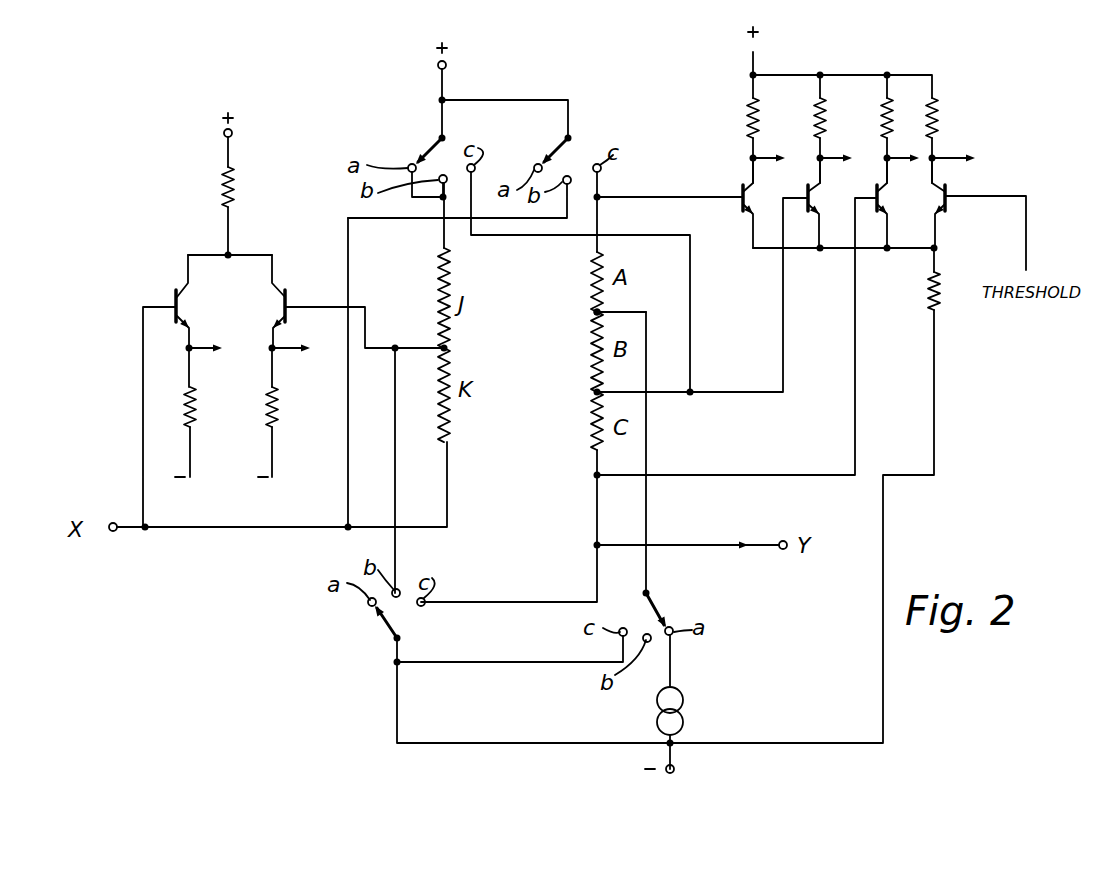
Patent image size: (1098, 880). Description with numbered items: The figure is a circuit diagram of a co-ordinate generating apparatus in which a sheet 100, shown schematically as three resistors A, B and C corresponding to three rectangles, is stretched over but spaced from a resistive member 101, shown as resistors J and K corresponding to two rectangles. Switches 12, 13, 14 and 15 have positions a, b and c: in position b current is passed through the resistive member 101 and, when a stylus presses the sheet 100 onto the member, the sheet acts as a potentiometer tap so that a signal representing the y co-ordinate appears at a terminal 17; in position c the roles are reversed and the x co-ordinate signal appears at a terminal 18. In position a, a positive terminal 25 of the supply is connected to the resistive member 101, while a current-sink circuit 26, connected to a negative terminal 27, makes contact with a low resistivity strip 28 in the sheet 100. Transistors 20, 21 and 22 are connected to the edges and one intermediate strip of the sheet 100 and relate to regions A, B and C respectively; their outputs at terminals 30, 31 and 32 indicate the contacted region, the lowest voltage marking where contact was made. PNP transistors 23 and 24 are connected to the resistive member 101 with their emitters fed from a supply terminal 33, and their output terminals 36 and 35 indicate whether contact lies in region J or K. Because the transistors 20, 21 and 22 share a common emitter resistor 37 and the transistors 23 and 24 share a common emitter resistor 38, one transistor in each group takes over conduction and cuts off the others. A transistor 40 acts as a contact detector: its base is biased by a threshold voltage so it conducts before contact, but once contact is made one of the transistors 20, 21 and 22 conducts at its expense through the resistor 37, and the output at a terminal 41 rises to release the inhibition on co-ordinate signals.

The switch 12 is at (553, 148).
The switch 13 is at (656, 603).
The switch 14 is at (425, 148).
The switch 15 is at (382, 622).
The terminal 17 is at (784, 540).
The terminal 18 is at (113, 523).
The transistor 20 is at (742, 200).
The transistor 21 is at (807, 190).
The transistor 22 is at (876, 190).
The PNP transistor 23 is at (174, 296).
The PNP transistor 24 is at (286, 295).
The positive terminal 25 is at (445, 64).
The current-sink circuit 26 is at (683, 698).
The negative terminal 27 is at (676, 770).
The low resistivity strip 28 is at (600, 311).
The terminal 30 is at (752, 158).
The terminal 31 is at (822, 156).
The terminal 32 is at (889, 156).
The supply terminal 33 is at (232, 134).
The terminal 35 is at (271, 349).
The terminal 36 is at (189, 349).
The common emitter resistor 37 is at (932, 290).
The common emitter resistor 38 is at (234, 186).
The transistor 40 is at (947, 205).
The terminal 41 is at (934, 155).
The sheet 100 is at (593, 258).
The resistive member 101 is at (440, 262).